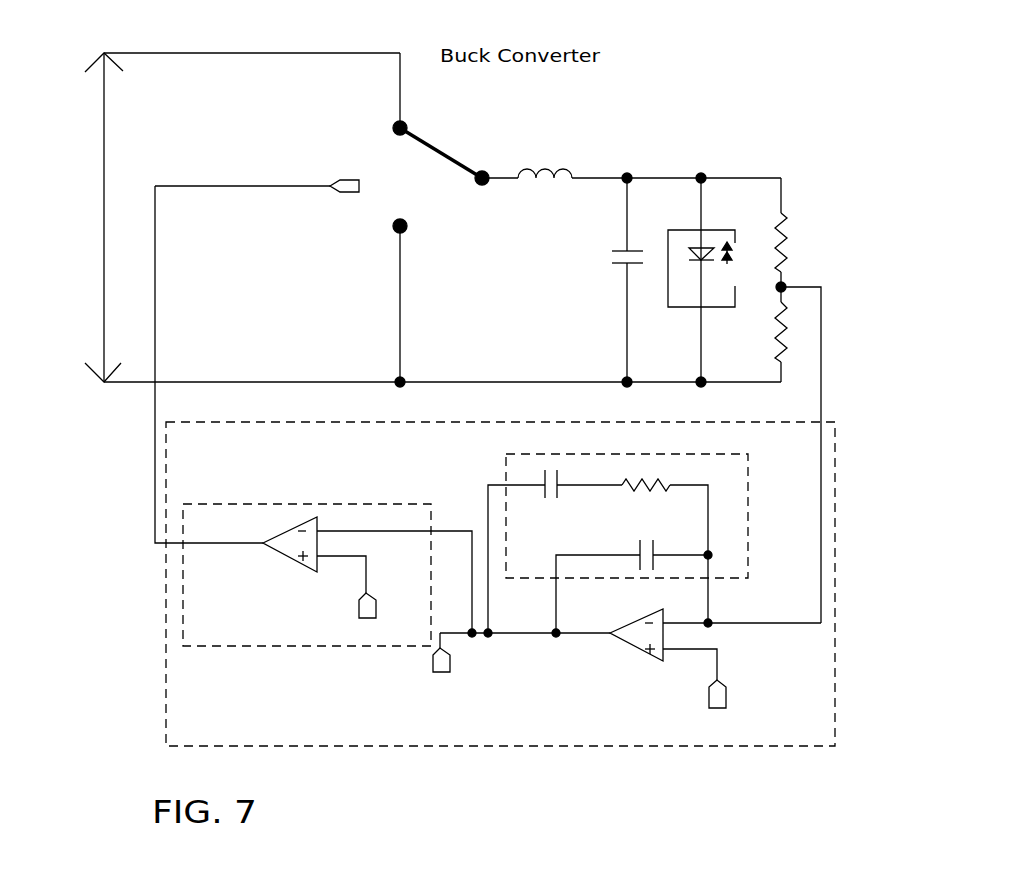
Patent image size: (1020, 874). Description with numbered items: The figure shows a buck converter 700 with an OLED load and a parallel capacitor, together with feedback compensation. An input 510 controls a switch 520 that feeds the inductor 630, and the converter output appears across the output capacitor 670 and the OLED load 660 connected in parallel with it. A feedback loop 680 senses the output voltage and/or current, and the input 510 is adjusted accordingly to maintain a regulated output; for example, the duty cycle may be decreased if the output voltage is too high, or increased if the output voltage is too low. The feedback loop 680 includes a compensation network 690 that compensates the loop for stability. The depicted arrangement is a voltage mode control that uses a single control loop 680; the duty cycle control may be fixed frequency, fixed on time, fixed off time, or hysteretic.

The buck converter OLED driver circuit 700 is at (113, 28).
The input 510 is at (353, 174).
The SPDT switch 520 is at (434, 133).
The inductor 630 is at (548, 146).
The output capacitor Cout 670 is at (618, 246).
The OLED load 660 is at (735, 230).
The feedback loop 680 is at (838, 431).
The compensation network 690 is at (529, 578).